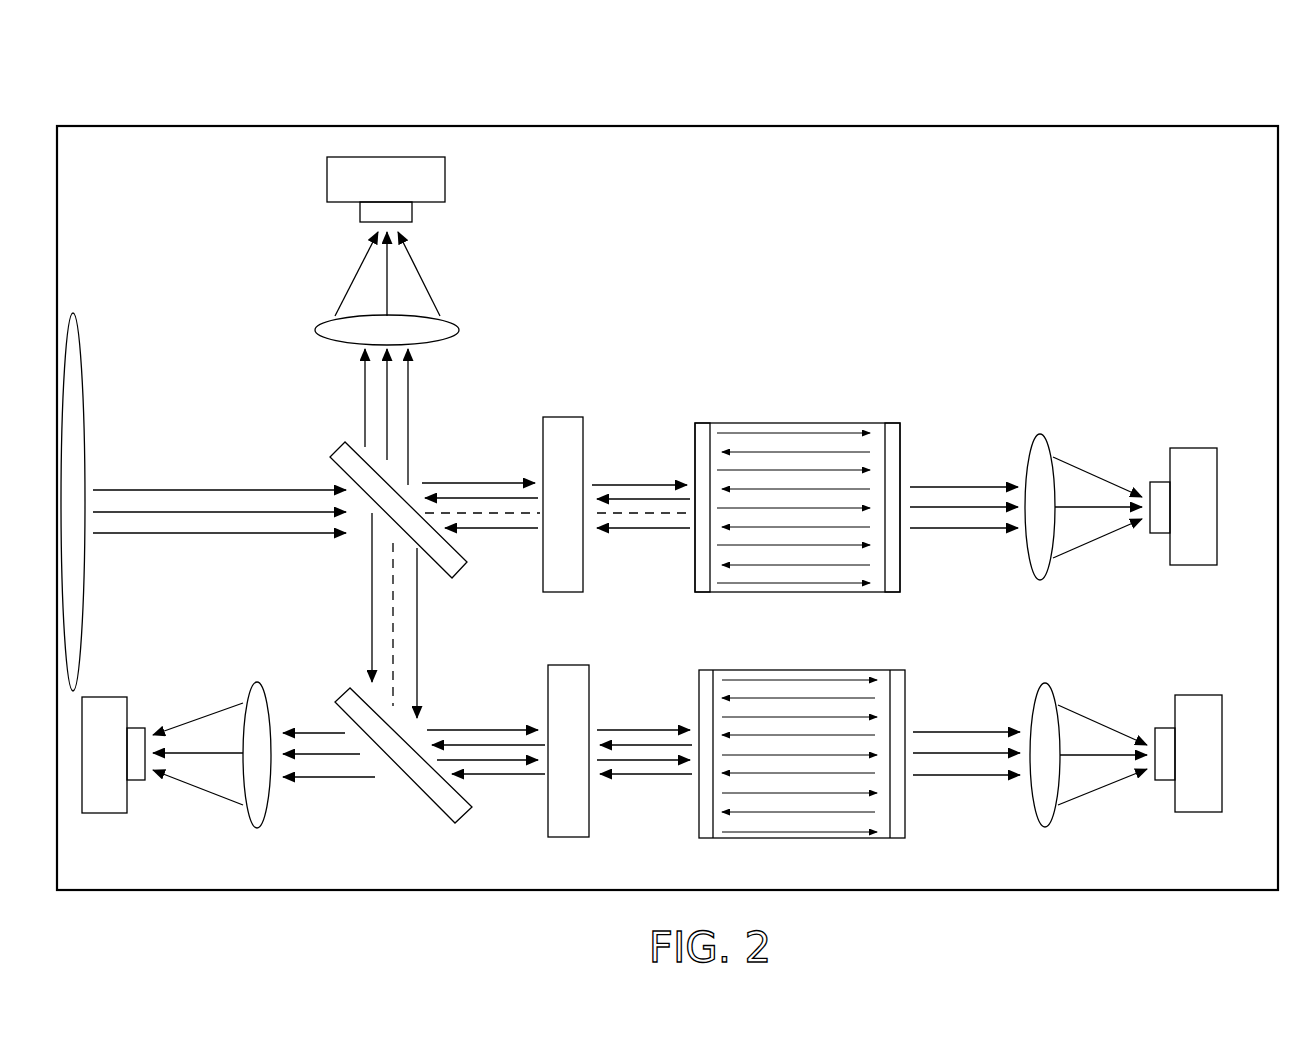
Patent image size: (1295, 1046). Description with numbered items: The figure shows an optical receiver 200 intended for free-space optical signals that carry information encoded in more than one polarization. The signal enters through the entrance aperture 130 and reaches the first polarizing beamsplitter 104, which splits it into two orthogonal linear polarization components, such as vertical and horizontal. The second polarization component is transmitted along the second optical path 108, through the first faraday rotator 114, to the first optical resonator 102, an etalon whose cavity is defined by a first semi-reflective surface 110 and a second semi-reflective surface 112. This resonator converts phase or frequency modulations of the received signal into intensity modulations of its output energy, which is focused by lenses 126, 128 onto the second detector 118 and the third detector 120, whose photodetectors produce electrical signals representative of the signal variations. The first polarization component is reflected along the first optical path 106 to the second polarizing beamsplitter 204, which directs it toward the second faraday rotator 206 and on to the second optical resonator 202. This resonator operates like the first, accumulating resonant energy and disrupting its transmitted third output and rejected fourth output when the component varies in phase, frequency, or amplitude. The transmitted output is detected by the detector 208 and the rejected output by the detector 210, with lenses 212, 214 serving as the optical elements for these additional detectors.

The optical receiver 200 is at (934, 103).
The first optical resonator 102 is at (835, 455).
The first polarizing beamsplitter 104 is at (340, 447).
The first optical path 106 is at (395, 556).
The second optical path 108 is at (500, 513).
The first semi-reflective surface 110 is at (896, 423).
The second semi-reflective surface 112 is at (708, 423).
The first faraday rotator 114 is at (580, 417).
The second detector 118 is at (1180, 448).
The third detector 120 is at (445, 172).
The lens 126 is at (460, 328).
The lens 128 is at (1040, 435).
The entrance aperture 130 is at (72, 314).
The second optical resonator 202 is at (864, 654).
The second polarizing beamsplitter 204 is at (340, 694).
The second faraday rotator 206 is at (585, 665).
The detector 208 is at (1185, 695).
The detector 210 is at (98, 697).
The lens 212 is at (1045, 682).
The lens 214 is at (257, 682).